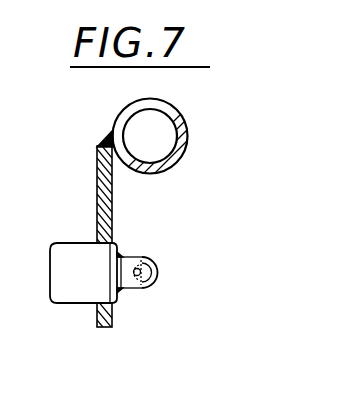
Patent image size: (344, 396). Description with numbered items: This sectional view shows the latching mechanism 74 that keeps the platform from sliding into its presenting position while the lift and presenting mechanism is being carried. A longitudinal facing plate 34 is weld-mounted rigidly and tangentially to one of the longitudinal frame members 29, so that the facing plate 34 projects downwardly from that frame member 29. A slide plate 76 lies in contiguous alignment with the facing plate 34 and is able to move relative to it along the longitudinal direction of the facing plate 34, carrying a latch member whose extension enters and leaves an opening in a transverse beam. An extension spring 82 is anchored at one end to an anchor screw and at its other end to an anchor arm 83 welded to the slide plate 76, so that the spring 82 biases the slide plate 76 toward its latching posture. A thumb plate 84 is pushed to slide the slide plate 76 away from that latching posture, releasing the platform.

The longitudinal frame member 29 is at (184, 132).
The longitudinal facing plate 34 is at (98, 198).
The latching mechanism 74 is at (203, 193).
The slide plate 76 is at (118, 302).
The extension spring 82 is at (158, 271).
The anchor arm 83 is at (126, 263).
The thumb plate 84 is at (65, 288).